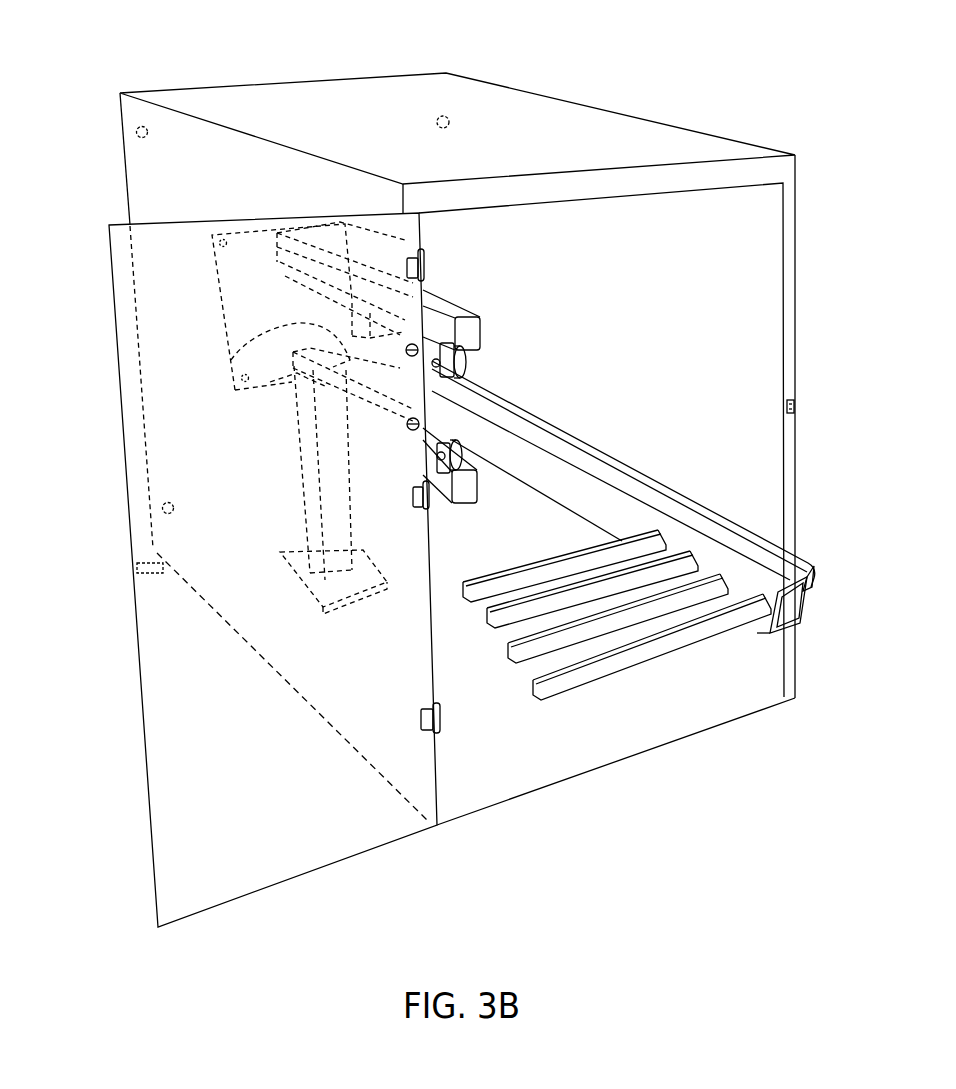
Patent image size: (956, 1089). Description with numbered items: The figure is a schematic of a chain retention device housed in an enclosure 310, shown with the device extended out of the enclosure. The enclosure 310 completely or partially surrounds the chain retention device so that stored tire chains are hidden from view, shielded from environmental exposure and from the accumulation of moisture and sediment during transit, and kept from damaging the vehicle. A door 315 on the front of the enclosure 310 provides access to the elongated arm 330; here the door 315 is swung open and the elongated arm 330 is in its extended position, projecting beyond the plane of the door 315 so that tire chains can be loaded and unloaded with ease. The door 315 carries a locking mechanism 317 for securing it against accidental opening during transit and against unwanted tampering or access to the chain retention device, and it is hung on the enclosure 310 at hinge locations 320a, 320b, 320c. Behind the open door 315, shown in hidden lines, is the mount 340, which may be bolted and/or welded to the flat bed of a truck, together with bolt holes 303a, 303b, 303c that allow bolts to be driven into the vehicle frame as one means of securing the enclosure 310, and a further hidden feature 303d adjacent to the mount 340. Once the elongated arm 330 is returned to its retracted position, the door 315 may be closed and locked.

The enclosure 310 is at (595, 107).
The door 315 is at (253, 853).
The locking mechanism 317 is at (797, 406).
The hinge pin 320a is at (136, 132).
The hinge pin 320b is at (162, 508).
The hinge pin 320c is at (441, 115).
The elongated arm 330 is at (585, 443).
The mount 340 is at (303, 580).
The bolt hole 303a is at (226, 236).
The bolt hole 303b is at (340, 211).
The bolt hole 303c is at (262, 390).
The connecting bracket 303d is at (231, 359).